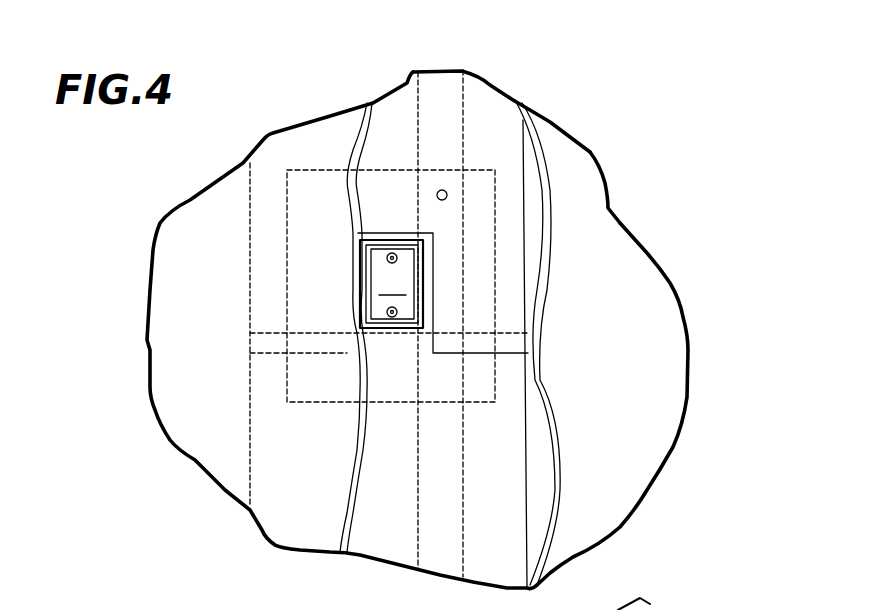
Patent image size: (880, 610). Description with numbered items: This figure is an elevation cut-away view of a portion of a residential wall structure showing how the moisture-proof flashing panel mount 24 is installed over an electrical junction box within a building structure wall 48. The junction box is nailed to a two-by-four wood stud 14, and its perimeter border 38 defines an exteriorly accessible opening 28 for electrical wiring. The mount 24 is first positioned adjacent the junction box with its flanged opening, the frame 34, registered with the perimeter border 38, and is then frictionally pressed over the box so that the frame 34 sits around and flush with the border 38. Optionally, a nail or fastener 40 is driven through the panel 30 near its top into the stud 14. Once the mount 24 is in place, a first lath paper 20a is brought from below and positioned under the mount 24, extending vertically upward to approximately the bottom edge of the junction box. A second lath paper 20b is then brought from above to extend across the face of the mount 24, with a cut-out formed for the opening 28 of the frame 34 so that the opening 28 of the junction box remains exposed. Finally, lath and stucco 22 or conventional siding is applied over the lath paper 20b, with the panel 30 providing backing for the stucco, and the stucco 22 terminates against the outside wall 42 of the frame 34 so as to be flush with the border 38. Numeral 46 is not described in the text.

The wood stud 14 is at (467, 112).
The first lath paper 20a is at (507, 450).
The second lath paper 20b is at (325, 343).
The stucco 22 is at (358, 451).
The moisture-proof flashing panel mount 24 is at (322, 168).
The exteriorly accessible opening 28 is at (371, 253).
The panel 30 is at (480, 185).
The frame 34 is at (392, 318).
The perimeter border 38 is at (413, 355).
The nail or fastener 40 is at (443, 188).
The outside wall of the frame 42 is at (360, 238).
The plate edge 46 is at (357, 300).
The building structure wall 48 is at (647, 250).